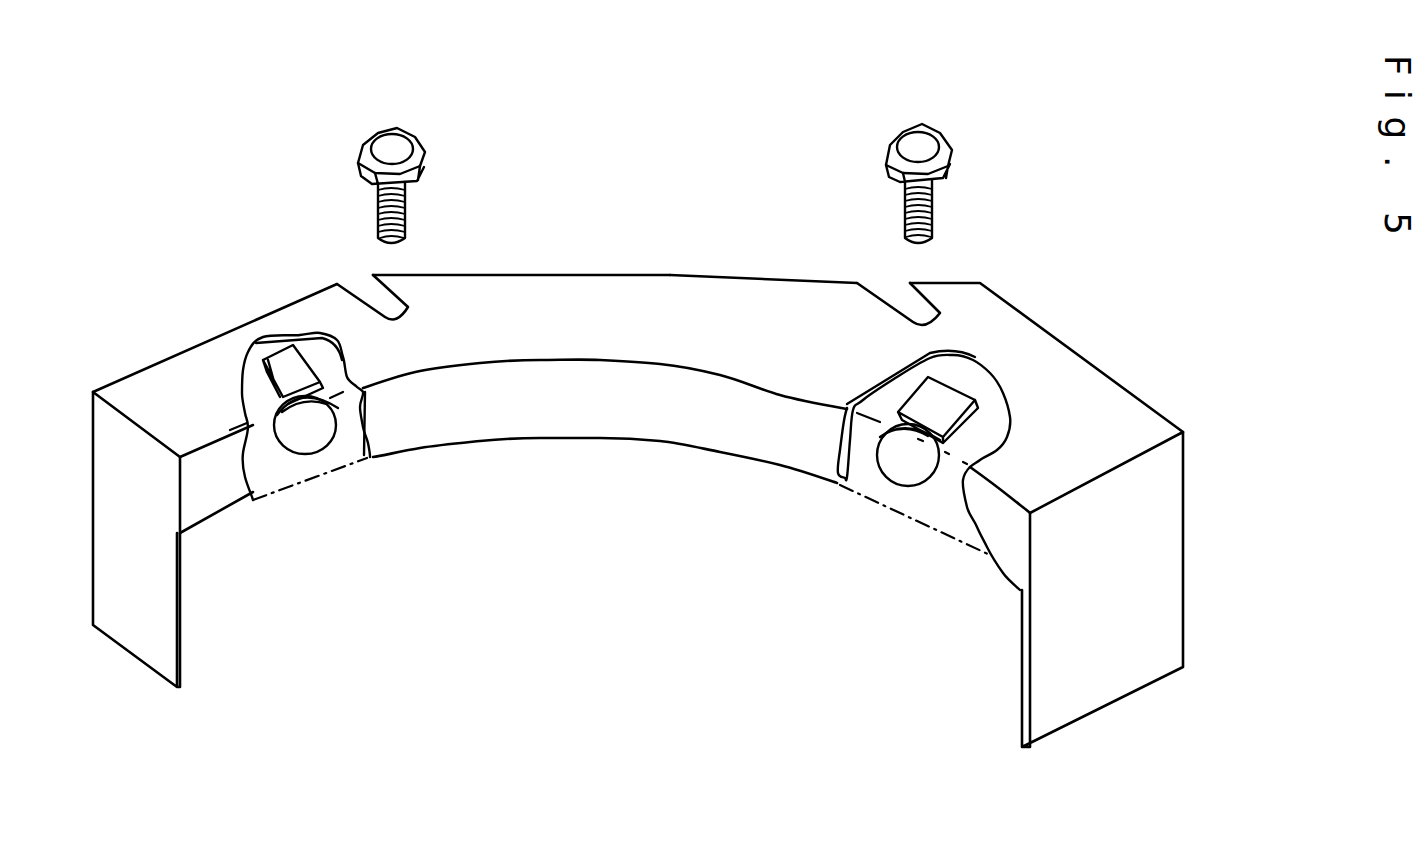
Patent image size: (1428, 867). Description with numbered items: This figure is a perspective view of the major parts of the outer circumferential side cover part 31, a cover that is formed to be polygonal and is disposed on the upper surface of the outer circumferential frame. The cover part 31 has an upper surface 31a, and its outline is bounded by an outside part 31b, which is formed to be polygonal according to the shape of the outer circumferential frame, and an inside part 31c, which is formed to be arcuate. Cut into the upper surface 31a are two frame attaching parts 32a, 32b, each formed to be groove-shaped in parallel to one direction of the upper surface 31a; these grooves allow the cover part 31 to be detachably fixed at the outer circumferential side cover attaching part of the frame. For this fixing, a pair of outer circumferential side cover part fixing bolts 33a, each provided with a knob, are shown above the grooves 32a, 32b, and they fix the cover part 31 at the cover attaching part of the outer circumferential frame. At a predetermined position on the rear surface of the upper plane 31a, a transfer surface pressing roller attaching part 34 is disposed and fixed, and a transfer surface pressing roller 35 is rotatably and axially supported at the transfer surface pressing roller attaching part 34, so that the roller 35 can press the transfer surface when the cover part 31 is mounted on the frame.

The outer circumferential side cover part 31 is at (232, 167).
The upper surface 31a is at (523, 303).
The outside part 31b is at (676, 272).
The inside part 31c is at (592, 412).
The frame attaching part 32a is at (375, 302).
The frame attaching part 32b is at (907, 305).
The outer circumferential side cover part fixing bolt 33a is at (368, 148).
The transfer surface pressing roller attaching part 34 is at (281, 363).
The transfer surface pressing roller 35 is at (308, 440).